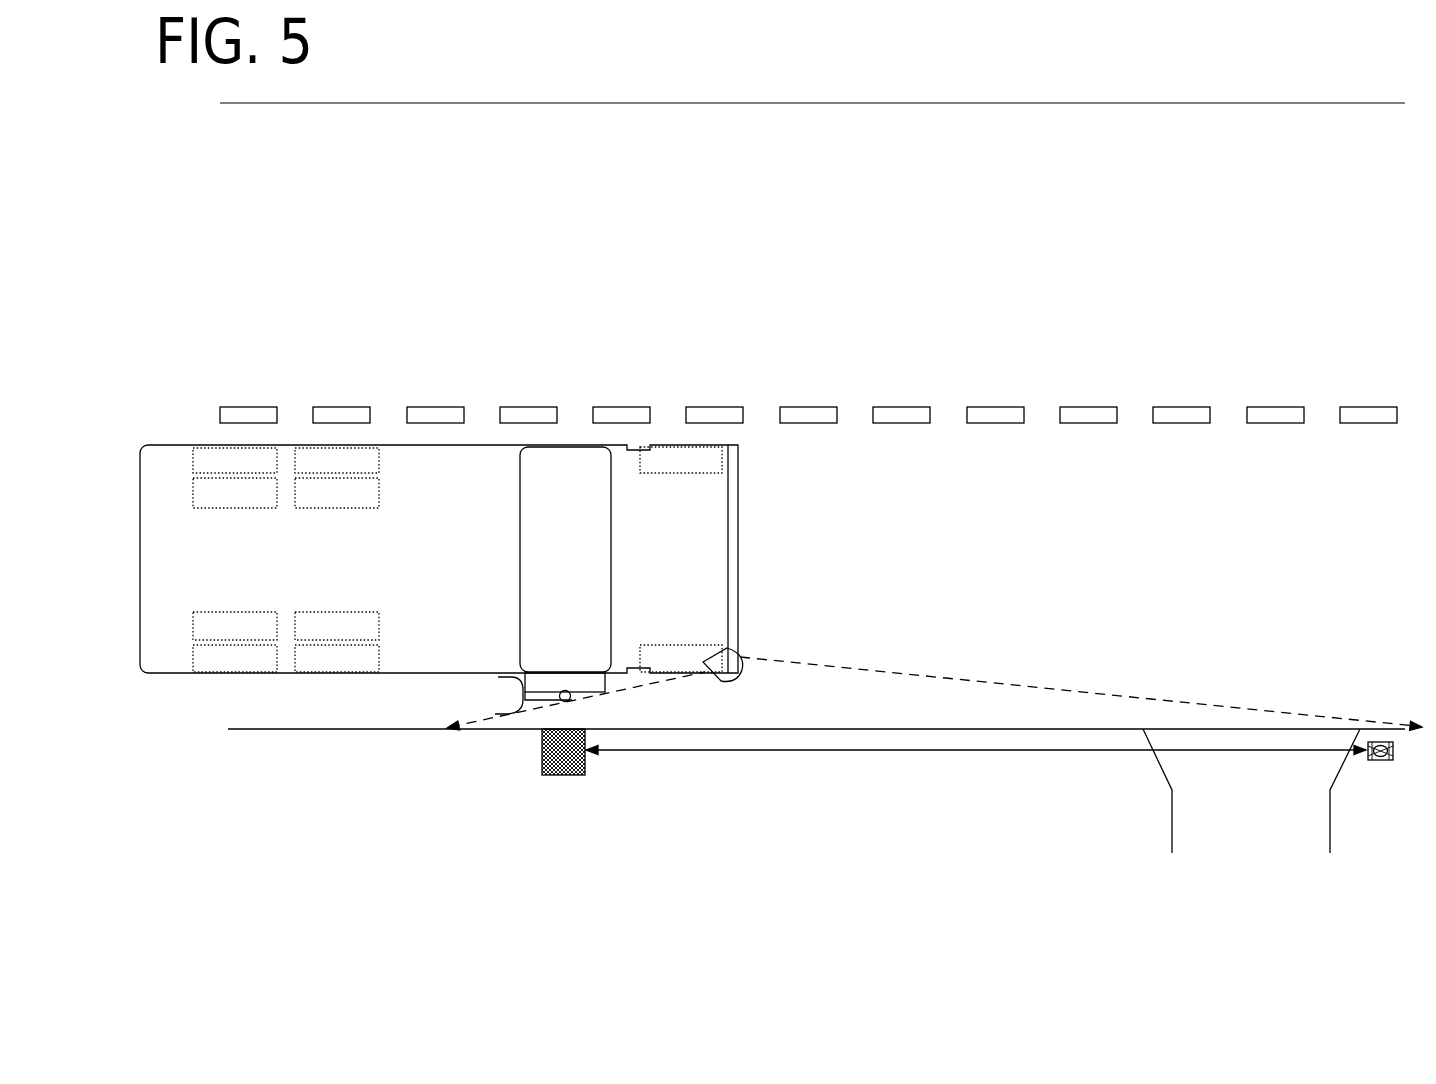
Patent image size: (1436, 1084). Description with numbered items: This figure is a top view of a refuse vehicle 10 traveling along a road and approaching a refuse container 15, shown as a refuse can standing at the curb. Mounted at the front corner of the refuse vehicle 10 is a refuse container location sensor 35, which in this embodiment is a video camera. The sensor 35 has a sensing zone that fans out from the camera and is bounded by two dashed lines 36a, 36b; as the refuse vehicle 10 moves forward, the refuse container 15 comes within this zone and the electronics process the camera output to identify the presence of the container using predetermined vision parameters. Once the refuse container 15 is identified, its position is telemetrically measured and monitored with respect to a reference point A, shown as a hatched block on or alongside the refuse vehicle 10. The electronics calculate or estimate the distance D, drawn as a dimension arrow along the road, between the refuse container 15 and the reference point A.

The refuse vehicle 10 is at (752, 441).
The refuse container location sensor 35 is at (724, 666).
The sensing zone boundary line 36a is at (1031, 686).
The sensing zone boundary line 36b is at (445, 724).
The refuse container 15 is at (1383, 760).
The reference point A is at (585, 775).
The distance D is at (862, 752).